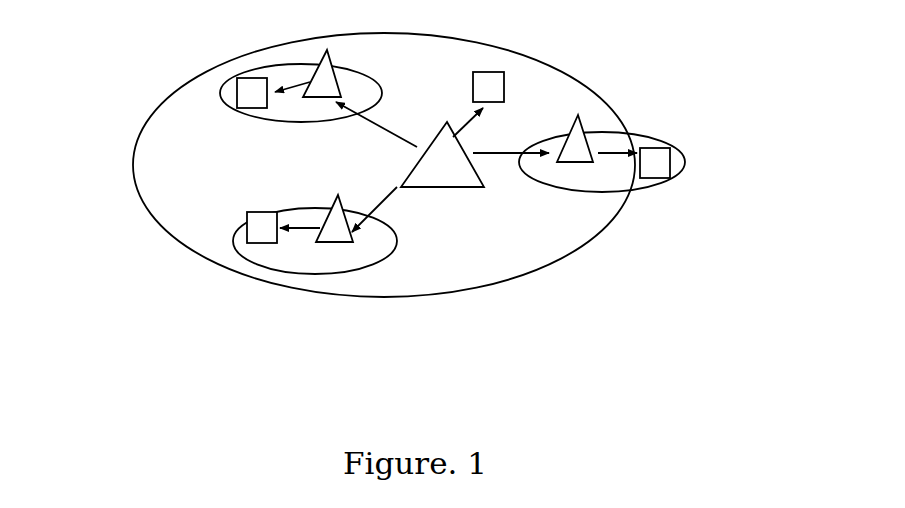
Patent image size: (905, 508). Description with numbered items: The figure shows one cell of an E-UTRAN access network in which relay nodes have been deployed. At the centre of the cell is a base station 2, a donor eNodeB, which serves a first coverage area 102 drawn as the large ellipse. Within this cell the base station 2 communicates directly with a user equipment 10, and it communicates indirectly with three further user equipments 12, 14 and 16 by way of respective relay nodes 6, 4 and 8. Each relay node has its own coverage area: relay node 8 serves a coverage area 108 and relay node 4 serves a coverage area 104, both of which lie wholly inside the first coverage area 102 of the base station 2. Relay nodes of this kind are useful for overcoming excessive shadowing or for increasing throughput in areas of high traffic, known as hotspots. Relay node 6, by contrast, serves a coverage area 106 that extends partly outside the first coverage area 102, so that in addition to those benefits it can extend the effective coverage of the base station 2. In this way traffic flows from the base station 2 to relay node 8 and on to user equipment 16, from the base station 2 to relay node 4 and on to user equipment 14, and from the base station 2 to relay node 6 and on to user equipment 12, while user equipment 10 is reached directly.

The base station 2 is at (460, 188).
The relay node 4 is at (335, 242).
The relay node 6 is at (588, 145).
The relay node 8 is at (338, 78).
The user equipment 10 is at (504, 82).
The user equipment 12 is at (670, 162).
The user equipment 14 is at (247, 215).
The user equipment 16 is at (237, 92).
The first coverage area 102 is at (593, 90).
The coverage area of relay node 104 is at (270, 273).
The coverage area of relay node 106 is at (597, 192).
The coverage area of relay node 108 is at (245, 116).